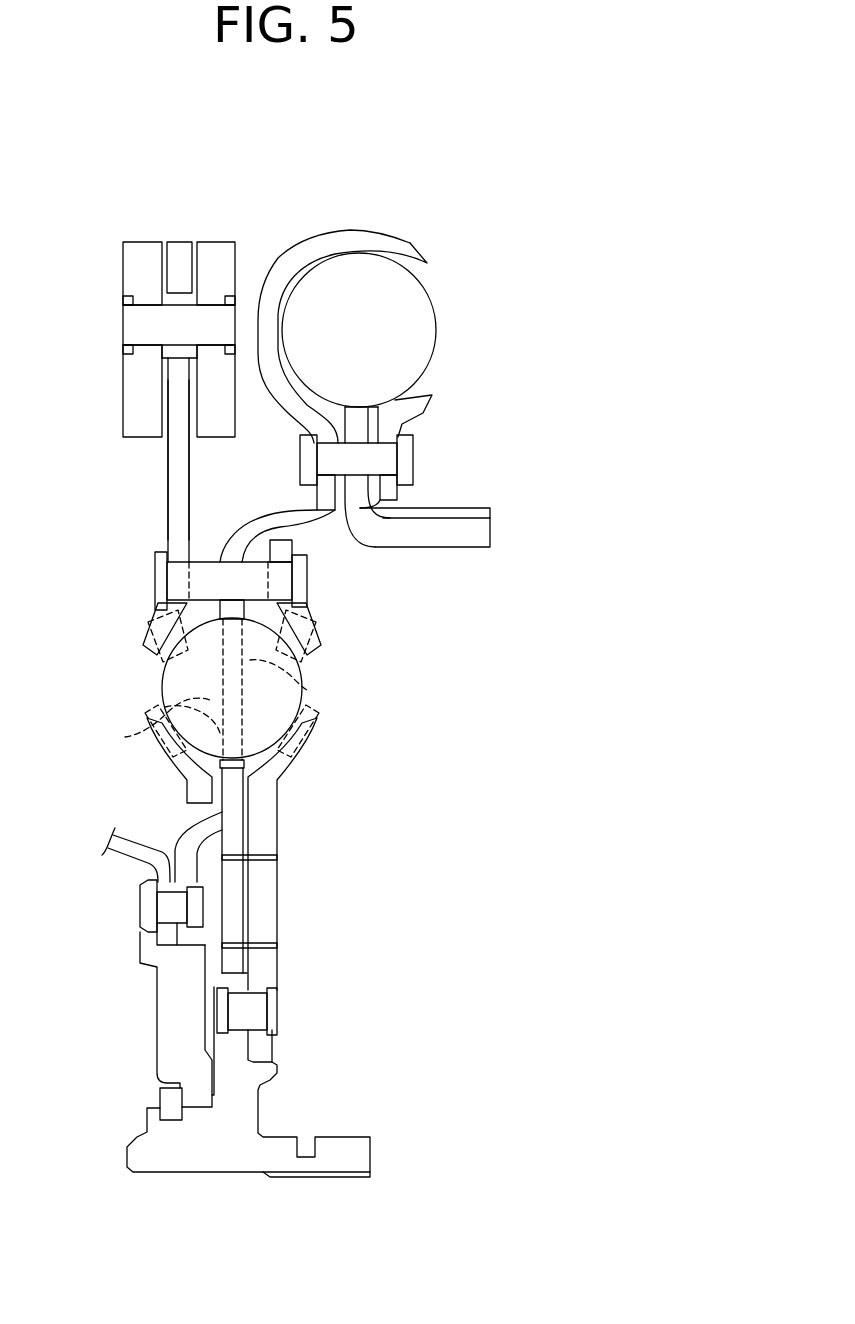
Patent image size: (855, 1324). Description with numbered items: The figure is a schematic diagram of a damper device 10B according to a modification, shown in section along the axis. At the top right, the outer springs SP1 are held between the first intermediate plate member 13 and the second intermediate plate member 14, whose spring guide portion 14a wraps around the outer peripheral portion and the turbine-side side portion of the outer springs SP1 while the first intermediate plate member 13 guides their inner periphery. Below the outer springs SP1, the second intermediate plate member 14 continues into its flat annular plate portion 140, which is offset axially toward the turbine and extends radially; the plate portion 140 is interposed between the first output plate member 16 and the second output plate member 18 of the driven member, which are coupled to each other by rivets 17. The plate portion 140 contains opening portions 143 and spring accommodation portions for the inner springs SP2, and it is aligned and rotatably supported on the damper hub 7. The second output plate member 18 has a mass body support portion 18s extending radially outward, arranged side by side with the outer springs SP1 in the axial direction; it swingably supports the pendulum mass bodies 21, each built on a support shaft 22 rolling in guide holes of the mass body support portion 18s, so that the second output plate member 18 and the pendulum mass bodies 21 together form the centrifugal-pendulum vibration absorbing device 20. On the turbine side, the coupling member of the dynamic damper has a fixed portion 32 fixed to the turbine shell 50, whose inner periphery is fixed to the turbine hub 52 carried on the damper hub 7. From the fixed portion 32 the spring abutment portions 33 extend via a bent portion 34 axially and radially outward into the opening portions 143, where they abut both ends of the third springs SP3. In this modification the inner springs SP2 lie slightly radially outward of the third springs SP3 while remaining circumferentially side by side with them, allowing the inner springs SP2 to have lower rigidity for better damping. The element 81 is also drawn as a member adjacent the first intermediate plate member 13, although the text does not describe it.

The pendulum mass bodies 21 is at (118, 273).
The support shaft 22 is at (135, 320).
The second output plate member 18 is at (160, 525).
The mass body support portion 18s is at (180, 408).
The centrifugal-pendulum vibration absorbing device 20 is at (160, 462).
The rivets 17 is at (298, 580).
The second intermediate plate member 14 is at (290, 500).
The spring guide portion 14a is at (318, 247).
The bar 81 is at (498, 520).
The first intermediate plate member 13 is at (413, 422).
The outer springs SP1 is at (421, 323).
The inner springs SP2 is at (125, 737).
The third springs SP3 is at (173, 665).
The spring abutment portions 33 is at (307, 690).
The bent portion 34 is at (203, 823).
The plate portion 140 is at (230, 898).
The opening portions 143 is at (237, 858).
The fixed portion 32 is at (185, 943).
The first output plate member 16 is at (275, 978).
The turbine shell 50 is at (135, 835).
The turbine hub 52 is at (165, 1058).
The damper hub 7 is at (162, 1127).
The damper device 10B is at (405, 608).